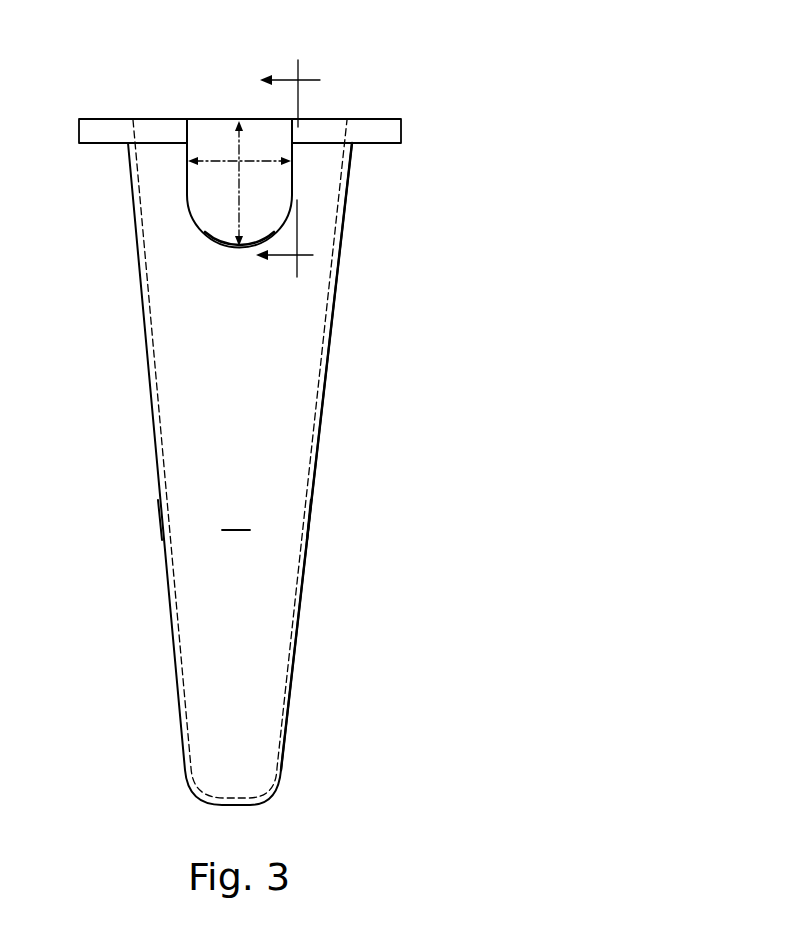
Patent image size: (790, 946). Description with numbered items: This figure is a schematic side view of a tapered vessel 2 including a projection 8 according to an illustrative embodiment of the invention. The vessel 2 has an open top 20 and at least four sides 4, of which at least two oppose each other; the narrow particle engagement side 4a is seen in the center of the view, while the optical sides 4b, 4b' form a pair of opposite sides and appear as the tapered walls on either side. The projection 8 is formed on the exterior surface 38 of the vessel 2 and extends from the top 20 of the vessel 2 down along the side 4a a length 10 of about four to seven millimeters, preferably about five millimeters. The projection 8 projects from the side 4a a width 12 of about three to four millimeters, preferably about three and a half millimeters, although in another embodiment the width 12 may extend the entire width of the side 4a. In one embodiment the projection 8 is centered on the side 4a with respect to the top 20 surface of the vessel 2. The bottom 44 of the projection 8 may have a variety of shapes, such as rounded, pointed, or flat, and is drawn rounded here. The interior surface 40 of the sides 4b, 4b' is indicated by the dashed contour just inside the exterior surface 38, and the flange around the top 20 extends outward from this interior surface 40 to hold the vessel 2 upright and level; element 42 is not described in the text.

The vessel 2 is at (352, 60).
The side 4 is at (295, 168).
The particle engagement side 4a is at (237, 517).
The optical side 4b is at (365, 520).
The optical side 4b' is at (107, 520).
The projection 8 is at (182, 196).
The length 10 is at (240, 188).
The width 12 is at (262, 157).
The top 20 is at (114, 114).
The exterior surface 38 is at (324, 443).
The interior surface 40 is at (133, 127).
The upper surface of flange 42 is at (222, 112).
The bottom 44 is at (230, 249).